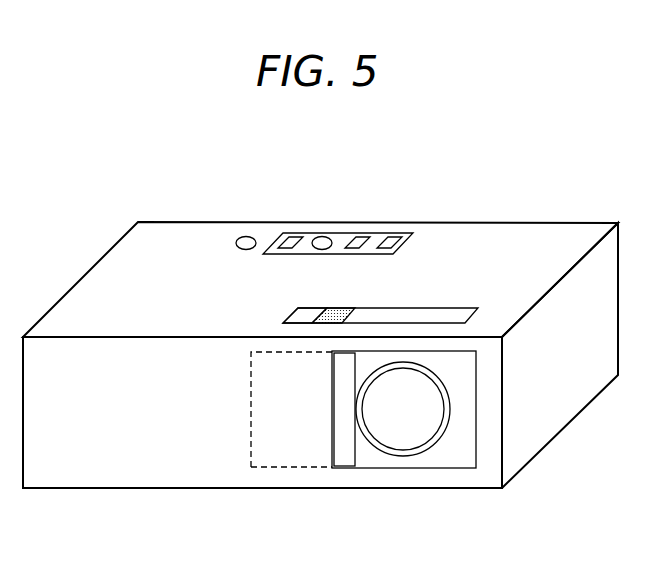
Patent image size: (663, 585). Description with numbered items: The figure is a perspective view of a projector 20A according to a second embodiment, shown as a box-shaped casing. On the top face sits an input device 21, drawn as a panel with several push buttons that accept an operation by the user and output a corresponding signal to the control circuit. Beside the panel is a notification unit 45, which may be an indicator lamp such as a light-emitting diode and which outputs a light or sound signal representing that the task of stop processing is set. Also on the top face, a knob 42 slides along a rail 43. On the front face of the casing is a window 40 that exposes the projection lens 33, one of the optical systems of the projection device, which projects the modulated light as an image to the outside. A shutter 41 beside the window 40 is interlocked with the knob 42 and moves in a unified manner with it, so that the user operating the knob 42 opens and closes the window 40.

The projector 20A is at (500, 243).
The input device 21 is at (387, 232).
The notification unit 45 is at (248, 236).
The knob 42 is at (337, 317).
The rail 43 is at (303, 317).
The window 40 is at (475, 435).
The shutter 41 is at (343, 413).
The projection lens 33 is at (402, 420).